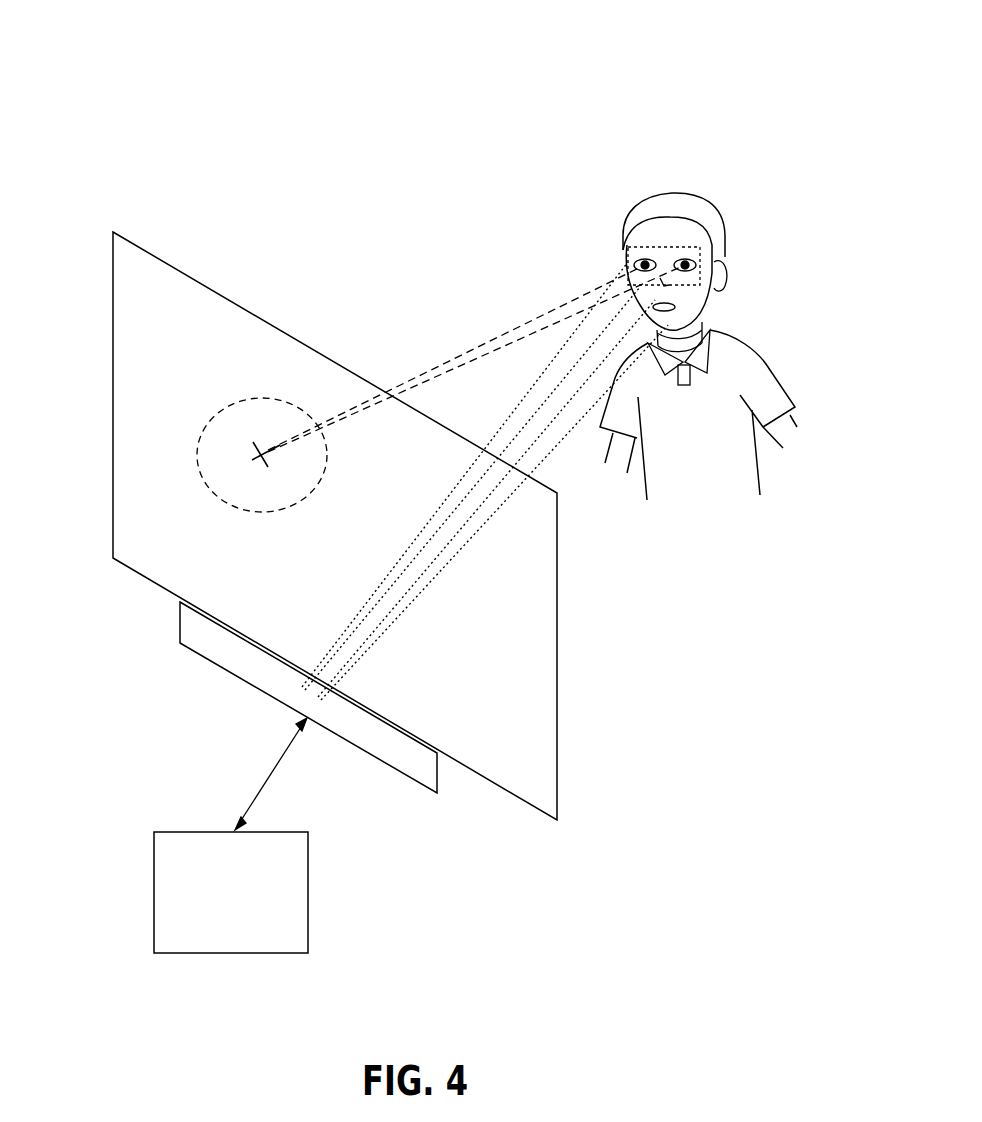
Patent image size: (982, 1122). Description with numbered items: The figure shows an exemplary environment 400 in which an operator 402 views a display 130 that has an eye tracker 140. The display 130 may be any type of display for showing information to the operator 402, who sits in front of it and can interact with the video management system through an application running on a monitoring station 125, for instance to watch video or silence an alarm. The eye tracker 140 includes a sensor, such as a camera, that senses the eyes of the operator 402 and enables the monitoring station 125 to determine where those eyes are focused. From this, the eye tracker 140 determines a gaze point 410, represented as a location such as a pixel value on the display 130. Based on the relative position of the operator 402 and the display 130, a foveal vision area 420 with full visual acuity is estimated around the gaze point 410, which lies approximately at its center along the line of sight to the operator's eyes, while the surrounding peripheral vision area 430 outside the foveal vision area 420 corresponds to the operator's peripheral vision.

The environment 400 is at (336, 88).
The operator 402 is at (738, 236).
The display 130 is at (113, 413).
The eye tracker 140 is at (201, 655).
The foveal vision area 420 is at (197, 433).
The gaze point 410 is at (270, 458).
The peripheral vision area 430 is at (227, 546).
The monitoring station 125 is at (231, 835).